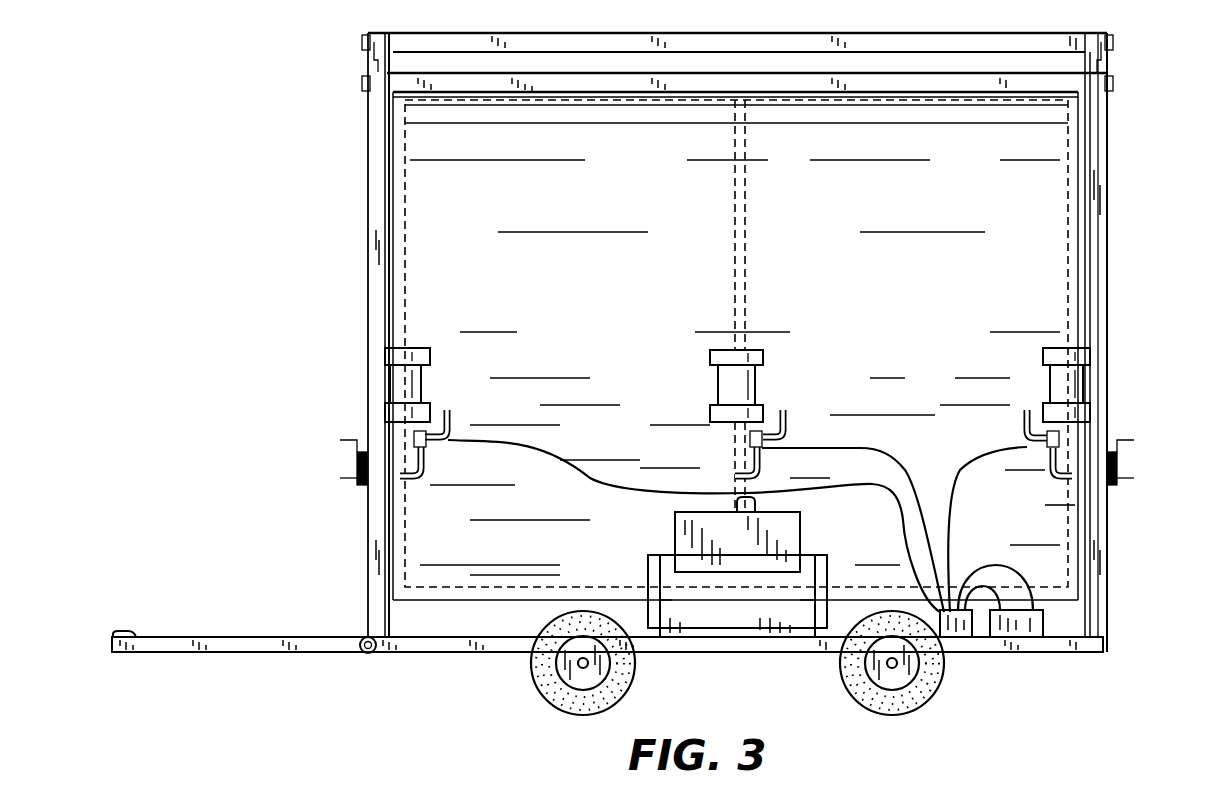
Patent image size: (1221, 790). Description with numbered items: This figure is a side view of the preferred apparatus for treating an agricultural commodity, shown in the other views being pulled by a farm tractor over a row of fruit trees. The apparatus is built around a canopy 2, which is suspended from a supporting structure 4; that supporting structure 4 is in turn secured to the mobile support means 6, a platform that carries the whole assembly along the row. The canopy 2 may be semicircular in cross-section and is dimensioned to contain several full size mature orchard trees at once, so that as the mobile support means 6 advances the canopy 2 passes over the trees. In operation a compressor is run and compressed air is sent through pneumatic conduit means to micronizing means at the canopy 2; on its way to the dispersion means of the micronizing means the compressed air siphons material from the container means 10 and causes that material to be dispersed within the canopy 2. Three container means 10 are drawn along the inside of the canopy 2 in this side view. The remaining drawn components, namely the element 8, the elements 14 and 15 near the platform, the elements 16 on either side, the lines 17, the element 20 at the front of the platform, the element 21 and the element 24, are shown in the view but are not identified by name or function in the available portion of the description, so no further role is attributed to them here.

The canopy 2 is at (445, 180).
The supporting structure 4 is at (1107, 115).
The mobile support means 6 is at (1103, 645).
The pump 8 is at (660, 565).
The container means 10 is at (392, 383).
The control box 14 is at (1022, 622).
The valve box 15 is at (955, 625).
The mounting hooks 16 is at (357, 468).
The hoses 17 is at (918, 478).
The trailer hitch 20 is at (123, 631).
The connecting lines 21 is at (985, 565).
The pump outlet fitting 24 is at (752, 502).